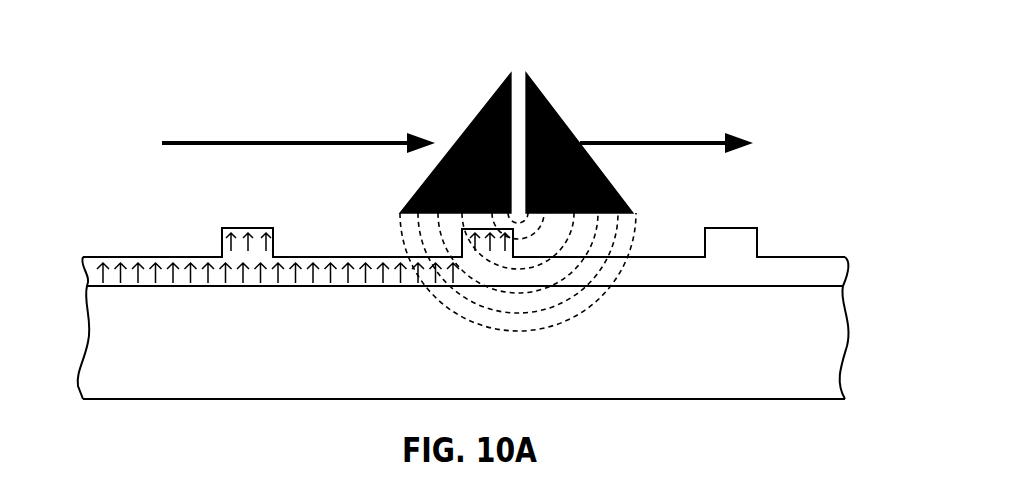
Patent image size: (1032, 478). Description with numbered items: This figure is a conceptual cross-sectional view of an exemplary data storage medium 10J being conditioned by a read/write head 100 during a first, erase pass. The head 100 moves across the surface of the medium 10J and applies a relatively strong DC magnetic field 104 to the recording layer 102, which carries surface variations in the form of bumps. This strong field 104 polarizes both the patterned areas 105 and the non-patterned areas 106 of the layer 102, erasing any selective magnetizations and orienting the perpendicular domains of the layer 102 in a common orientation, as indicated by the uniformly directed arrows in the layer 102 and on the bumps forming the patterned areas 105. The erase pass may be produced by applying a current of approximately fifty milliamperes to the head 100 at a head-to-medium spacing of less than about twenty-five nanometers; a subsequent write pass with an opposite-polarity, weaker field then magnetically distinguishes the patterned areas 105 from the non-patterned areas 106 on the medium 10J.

The read/write head 100 is at (550, 100).
The recording layer 102 is at (85, 260).
The DC magnetic field 104 is at (652, 211).
The patterned areas 105 is at (462, 236).
The non-patterned areas 106 is at (354, 244).
The data storage medium 10J is at (874, 334).